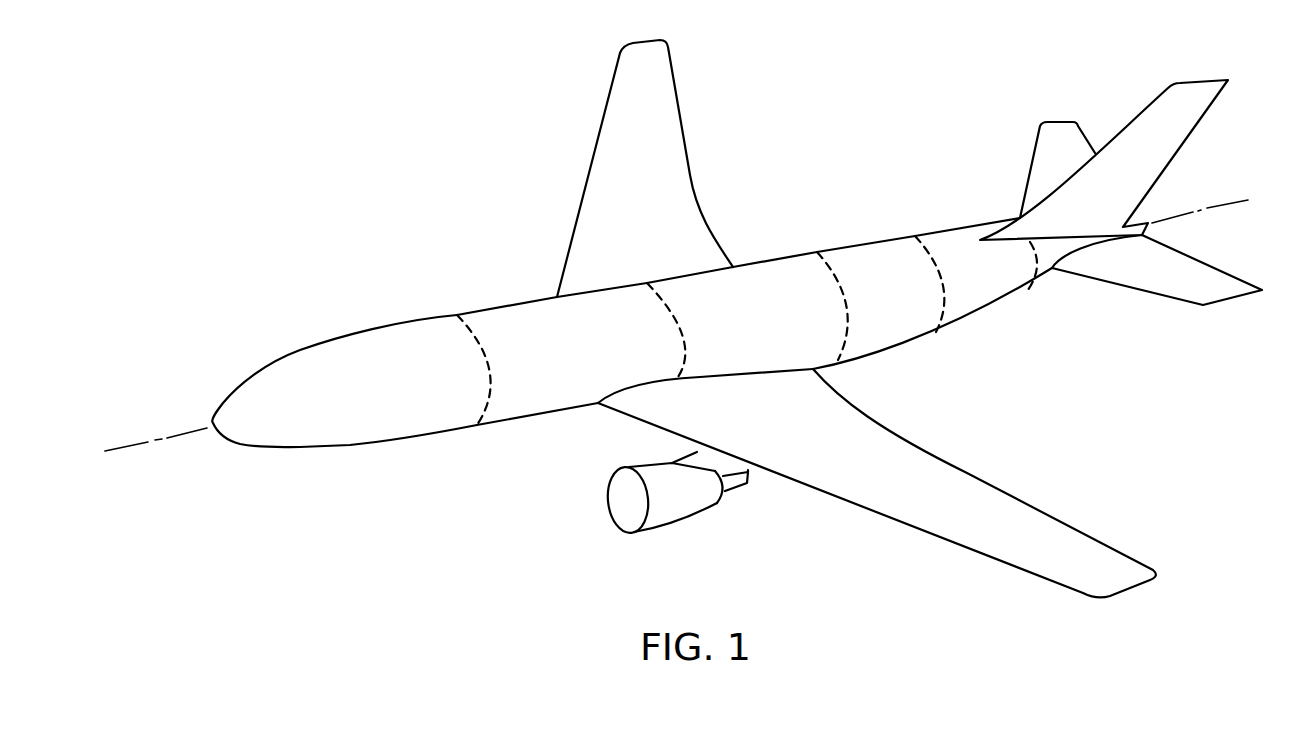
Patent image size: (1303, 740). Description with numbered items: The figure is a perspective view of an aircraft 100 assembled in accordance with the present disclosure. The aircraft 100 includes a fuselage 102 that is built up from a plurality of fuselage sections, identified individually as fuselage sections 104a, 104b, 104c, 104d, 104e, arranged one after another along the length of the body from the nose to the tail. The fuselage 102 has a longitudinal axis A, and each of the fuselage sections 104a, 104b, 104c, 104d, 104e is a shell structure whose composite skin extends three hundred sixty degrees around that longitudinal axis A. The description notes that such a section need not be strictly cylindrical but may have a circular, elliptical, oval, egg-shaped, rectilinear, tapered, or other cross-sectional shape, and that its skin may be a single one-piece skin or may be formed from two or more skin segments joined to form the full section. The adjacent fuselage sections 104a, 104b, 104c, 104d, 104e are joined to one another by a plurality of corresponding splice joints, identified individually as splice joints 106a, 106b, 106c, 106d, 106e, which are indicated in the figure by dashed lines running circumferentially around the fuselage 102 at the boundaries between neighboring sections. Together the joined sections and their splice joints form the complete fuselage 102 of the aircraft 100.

The aircraft 100 is at (310, 154).
The fuselage 102 is at (255, 457).
The longitudinal axis A is at (667, 334).
The fuselage section 104a is at (370, 445).
The fuselage section 104b is at (552, 418).
The fuselage section 104c is at (785, 258).
The fuselage section 104d is at (898, 348).
The fuselage section 104e is at (995, 312).
The splice joint 106a is at (490, 366).
The splice joint 106b is at (683, 340).
The splice joint 106c is at (847, 308).
The splice joint 106d is at (947, 270).
The splice joint 106e is at (1038, 277).